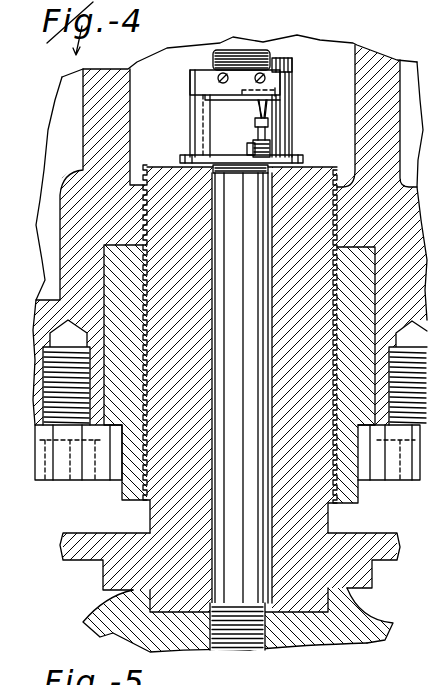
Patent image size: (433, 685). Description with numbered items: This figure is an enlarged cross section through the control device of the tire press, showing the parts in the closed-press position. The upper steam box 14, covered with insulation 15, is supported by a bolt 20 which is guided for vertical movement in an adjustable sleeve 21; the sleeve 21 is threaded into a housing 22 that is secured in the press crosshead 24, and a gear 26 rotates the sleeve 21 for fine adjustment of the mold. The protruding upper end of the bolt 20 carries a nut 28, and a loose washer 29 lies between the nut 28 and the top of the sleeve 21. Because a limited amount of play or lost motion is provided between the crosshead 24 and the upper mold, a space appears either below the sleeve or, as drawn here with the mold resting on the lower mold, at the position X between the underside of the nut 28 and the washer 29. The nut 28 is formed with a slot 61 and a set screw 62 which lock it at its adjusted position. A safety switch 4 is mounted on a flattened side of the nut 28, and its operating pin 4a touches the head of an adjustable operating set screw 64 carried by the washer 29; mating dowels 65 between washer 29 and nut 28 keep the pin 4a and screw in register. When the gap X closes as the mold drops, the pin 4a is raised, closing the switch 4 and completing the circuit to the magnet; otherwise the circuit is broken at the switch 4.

The upper steam box 14 is at (249, 636).
The insulation 15 is at (367, 618).
The bolt 20 is at (250, 597).
The adjustable sleeve 21 is at (307, 514).
The housing 22 is at (137, 475).
The press crosshead 24 is at (80, 190).
The gear 26 is at (90, 548).
The nut 28 is at (267, 103).
The loose washer 29 is at (300, 165).
The slot 61 is at (276, 92).
The set screw 62 is at (272, 60).
The adjustable operating set screw 64 is at (254, 133).
The mating dowels 65 is at (253, 153).
The safety switch 4 is at (289, 67).
The operating pin 4a is at (262, 118).
The space x' X is at (298, 160).